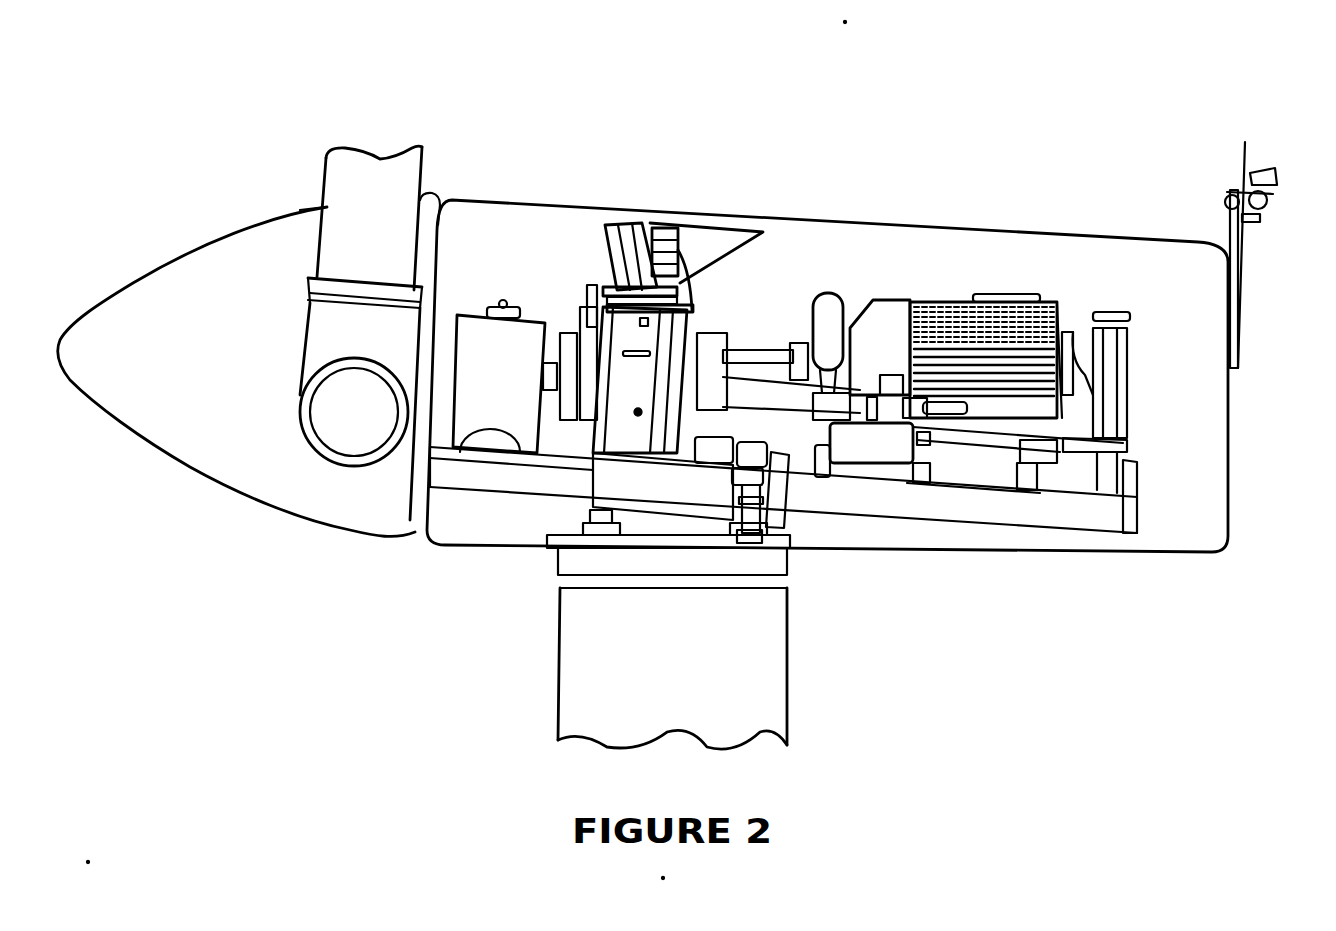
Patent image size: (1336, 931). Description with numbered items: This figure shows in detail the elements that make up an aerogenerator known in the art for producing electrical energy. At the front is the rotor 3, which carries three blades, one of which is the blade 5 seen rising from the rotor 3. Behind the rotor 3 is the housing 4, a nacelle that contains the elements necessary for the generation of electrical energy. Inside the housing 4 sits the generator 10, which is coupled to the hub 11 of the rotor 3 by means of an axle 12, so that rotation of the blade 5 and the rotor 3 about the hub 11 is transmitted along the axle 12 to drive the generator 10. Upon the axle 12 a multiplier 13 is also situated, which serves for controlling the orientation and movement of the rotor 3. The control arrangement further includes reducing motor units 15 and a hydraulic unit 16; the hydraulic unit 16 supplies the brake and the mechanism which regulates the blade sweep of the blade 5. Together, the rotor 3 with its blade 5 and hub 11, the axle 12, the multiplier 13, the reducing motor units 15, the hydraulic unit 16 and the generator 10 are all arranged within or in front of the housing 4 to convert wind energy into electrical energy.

The rotor 3 is at (190, 240).
The housing 4 is at (1223, 564).
The blade 5 is at (380, 150).
The generator 10 is at (901, 347).
The hub 11 is at (333, 353).
The axle 12 is at (489, 405).
The multiplier 13 is at (657, 300).
The reducing motor units 15 is at (787, 507).
The hydraulic unit 16 is at (860, 445).